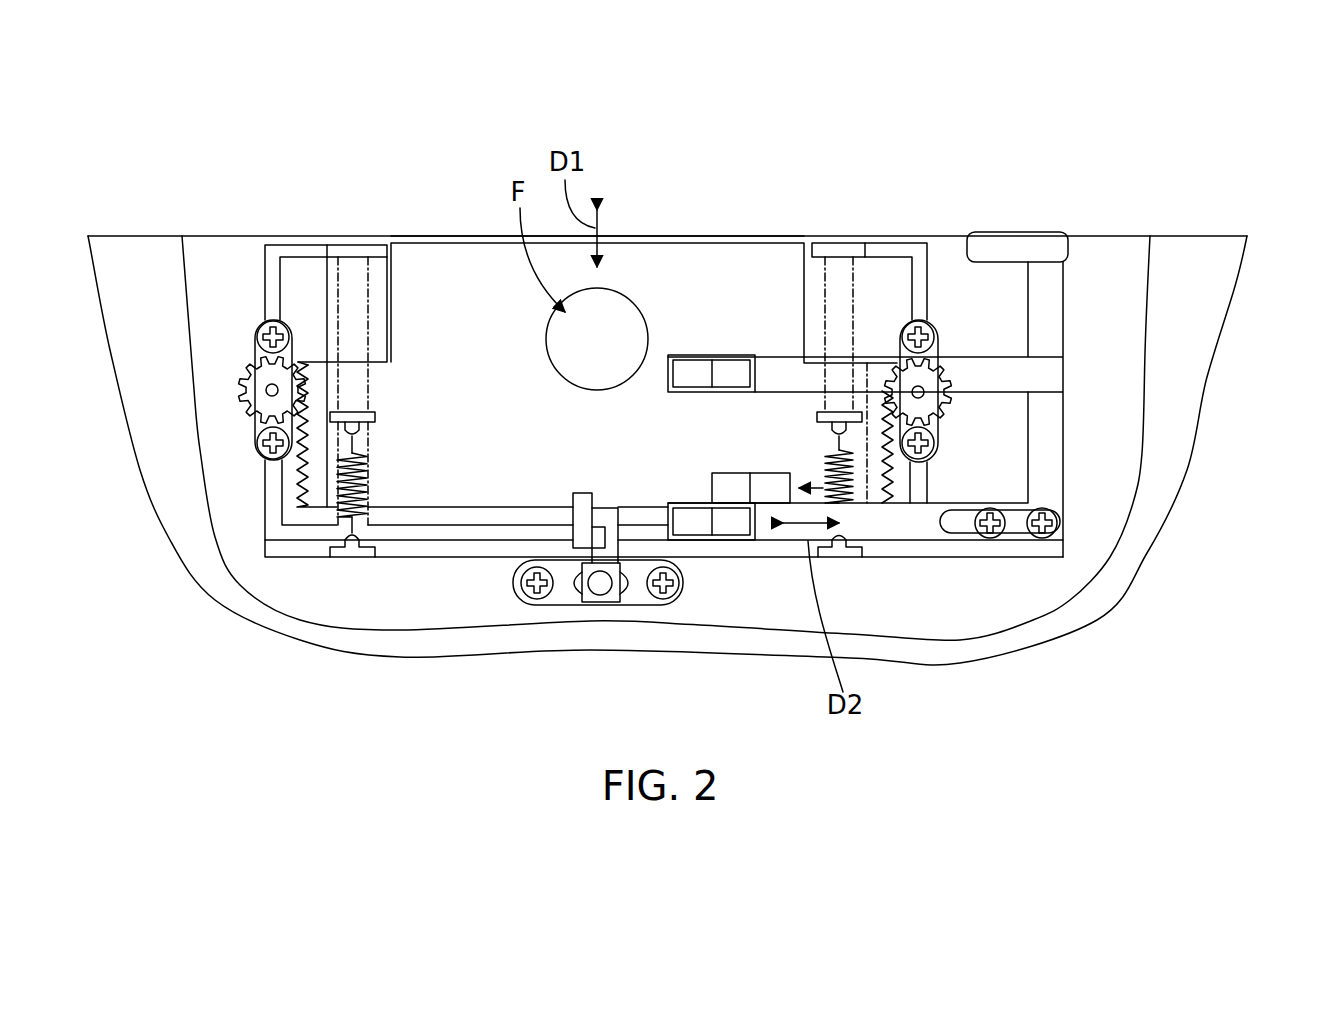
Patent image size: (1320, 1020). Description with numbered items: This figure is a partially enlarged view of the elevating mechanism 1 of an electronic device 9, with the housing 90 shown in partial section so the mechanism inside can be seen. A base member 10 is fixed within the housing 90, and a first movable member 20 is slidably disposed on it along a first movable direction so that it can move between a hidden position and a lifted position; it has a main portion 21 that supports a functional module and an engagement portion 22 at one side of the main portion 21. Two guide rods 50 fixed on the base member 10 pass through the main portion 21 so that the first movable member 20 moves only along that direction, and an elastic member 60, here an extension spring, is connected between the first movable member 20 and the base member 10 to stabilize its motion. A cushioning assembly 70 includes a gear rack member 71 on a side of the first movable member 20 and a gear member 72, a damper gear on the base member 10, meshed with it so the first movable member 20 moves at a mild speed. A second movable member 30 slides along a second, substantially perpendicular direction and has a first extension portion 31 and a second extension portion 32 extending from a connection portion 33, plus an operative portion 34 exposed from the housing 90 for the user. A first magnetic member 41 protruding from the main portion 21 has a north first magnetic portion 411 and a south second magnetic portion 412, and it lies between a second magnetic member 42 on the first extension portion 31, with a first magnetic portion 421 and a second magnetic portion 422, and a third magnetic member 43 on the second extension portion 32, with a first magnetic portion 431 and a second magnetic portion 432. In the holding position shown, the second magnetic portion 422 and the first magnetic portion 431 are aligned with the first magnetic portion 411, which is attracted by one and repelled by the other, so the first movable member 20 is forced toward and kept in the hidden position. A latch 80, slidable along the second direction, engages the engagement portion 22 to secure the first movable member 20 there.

The elevating mechanism 1 is at (320, 210).
The electronic device 9 is at (127, 146).
The base member 10 is at (905, 240).
The first movable member 20 is at (644, 230).
The main portion 21 is at (718, 265).
The engagement portion 22 is at (580, 526).
The second movable member 30 is at (989, 407).
The first extension portion 31 is at (893, 523).
The second extension portion 32 is at (923, 420).
The connection portion 33 is at (1047, 320).
The operative portion 34 is at (1055, 248).
The first magnetic member 41 is at (795, 568).
The first magnetic portion 411 is at (730, 473).
The second magnetic portion 412 is at (768, 473).
The second magnetic member 42 is at (726, 609).
The first magnetic portion 421 is at (693, 540).
The second magnetic portion 422 is at (753, 540).
The third magnetic member 43 is at (727, 284).
The first magnetic portion 431 is at (738, 357).
The second magnetic portion 432 is at (690, 357).
The guide rod 50 is at (362, 302).
The elastic member 60 is at (368, 487).
The cushioning assembly 70 is at (544, 438).
The gear rack member 71 is at (295, 467).
The gear member 72 is at (233, 384).
The latch 80 is at (600, 609).
The housing 90 is at (130, 311).